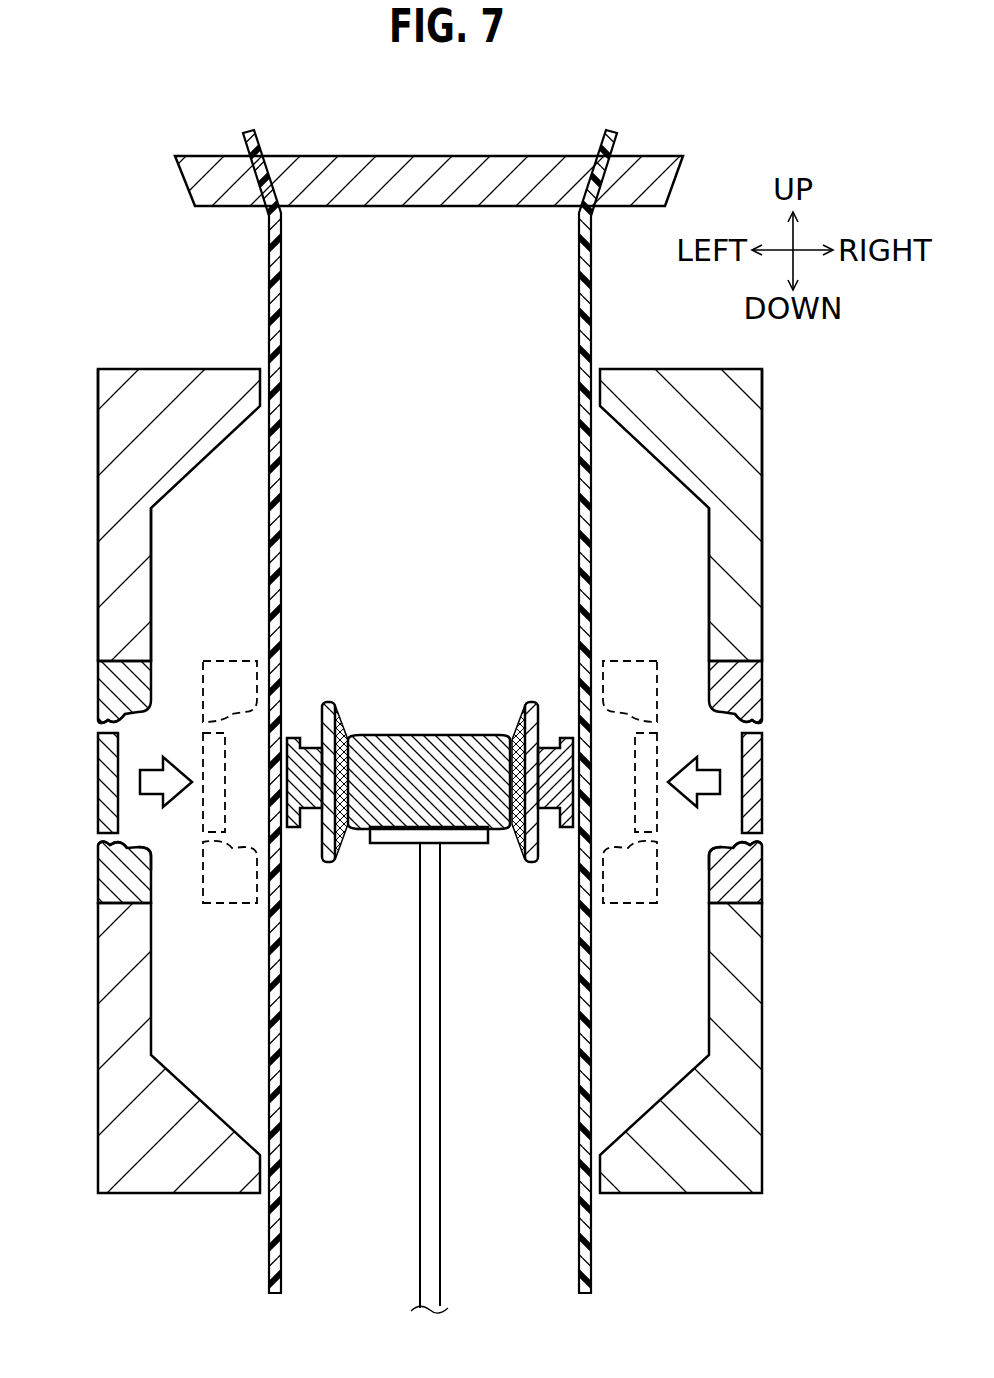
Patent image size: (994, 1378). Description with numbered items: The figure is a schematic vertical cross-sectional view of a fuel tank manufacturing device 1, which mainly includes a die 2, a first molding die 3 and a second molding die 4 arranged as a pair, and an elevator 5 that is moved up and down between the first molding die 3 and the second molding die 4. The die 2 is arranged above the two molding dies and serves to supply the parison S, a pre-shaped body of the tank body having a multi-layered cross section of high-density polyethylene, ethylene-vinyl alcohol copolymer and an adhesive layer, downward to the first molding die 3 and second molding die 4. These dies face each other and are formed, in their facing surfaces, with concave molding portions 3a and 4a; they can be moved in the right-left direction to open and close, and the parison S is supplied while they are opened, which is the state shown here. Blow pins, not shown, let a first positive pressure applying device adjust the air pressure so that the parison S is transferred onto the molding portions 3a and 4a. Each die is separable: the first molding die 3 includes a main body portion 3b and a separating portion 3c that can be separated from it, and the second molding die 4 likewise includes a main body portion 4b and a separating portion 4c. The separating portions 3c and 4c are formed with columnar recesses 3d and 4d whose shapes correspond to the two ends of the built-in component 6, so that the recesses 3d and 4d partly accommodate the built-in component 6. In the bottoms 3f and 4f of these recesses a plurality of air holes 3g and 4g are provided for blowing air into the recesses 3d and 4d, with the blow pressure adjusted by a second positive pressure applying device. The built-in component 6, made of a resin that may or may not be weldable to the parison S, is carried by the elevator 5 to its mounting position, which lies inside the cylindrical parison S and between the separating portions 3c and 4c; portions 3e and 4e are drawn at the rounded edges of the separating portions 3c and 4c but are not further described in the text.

The fuel tank manufacturing device 1 is at (716, 121).
The die 2 is at (433, 156).
The first molding die 3 is at (157, 369).
The molding portion 3a is at (157, 566).
The main body portion 3b is at (98, 568).
The separating portion 3c is at (98, 692).
The recess 3d is at (138, 749).
The corner portion of left holding member 3e is at (152, 856).
The bottom 3f is at (112, 782).
The air holes 3g is at (104, 722).
The second molding die 4 is at (703, 369).
The molding portion 4a is at (703, 566).
The main body portion 4b is at (762, 568).
The separating portion 4c is at (762, 692).
The recess 4d is at (722, 749).
The corner portion of right holding member 4e is at (708, 856).
The bottom 4f is at (748, 782).
The air holes 4g is at (756, 722).
The elevator 5 is at (440, 1080).
The built-in component 6 is at (432, 737).
The parison S is at (591, 300).